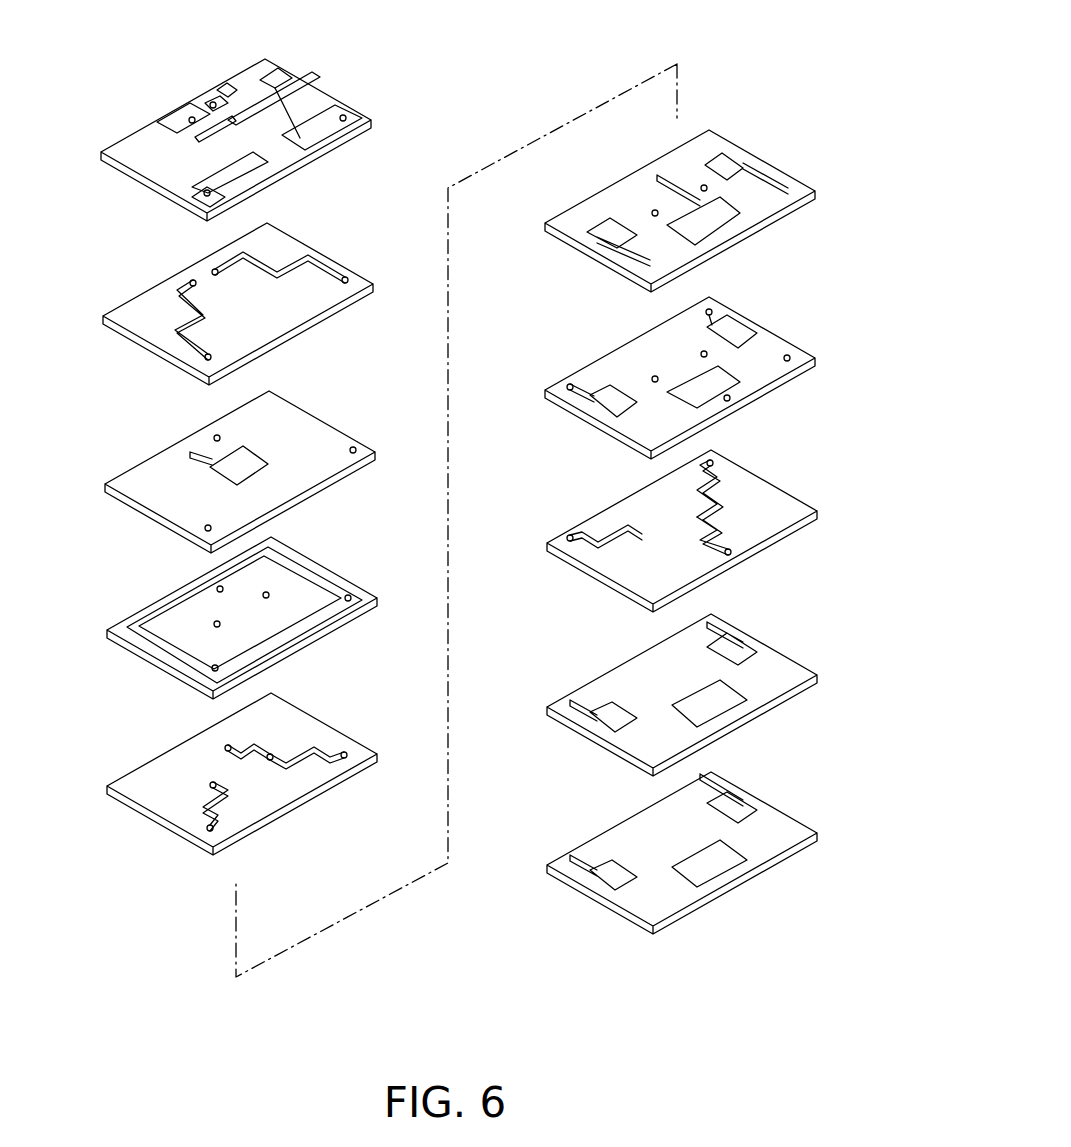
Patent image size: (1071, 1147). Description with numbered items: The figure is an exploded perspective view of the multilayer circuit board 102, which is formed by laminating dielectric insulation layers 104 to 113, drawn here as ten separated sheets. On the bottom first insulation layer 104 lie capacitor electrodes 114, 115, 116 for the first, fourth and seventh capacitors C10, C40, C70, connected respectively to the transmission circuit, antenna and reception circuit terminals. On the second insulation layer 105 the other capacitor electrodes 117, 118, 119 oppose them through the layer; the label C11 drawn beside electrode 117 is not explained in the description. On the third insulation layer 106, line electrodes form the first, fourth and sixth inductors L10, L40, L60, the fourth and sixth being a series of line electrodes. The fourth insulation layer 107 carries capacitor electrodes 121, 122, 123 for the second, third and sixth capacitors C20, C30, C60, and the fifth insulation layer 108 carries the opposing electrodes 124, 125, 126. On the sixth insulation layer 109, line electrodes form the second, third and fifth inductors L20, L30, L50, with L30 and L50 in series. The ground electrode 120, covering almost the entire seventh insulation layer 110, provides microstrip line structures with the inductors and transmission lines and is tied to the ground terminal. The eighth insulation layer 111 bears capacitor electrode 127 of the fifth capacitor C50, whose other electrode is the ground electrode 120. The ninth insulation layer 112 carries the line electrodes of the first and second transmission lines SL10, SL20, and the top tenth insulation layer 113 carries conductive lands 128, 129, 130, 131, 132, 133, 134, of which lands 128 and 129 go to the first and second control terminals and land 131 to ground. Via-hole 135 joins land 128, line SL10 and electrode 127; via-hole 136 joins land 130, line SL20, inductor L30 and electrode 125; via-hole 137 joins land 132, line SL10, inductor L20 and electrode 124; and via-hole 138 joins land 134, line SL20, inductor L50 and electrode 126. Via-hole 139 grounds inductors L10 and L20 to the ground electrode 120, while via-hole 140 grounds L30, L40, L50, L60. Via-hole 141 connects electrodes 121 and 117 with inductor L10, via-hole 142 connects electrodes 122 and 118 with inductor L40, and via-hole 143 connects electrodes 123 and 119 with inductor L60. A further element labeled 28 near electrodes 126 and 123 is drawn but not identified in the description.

The multilayer circuit board 102 is at (134, 41).
The first insulation layer 104 is at (819, 838).
The second insulation layer 105 is at (819, 678).
The third insulation layer 106 is at (819, 512).
The fourth insulation layer 107 is at (818, 360).
The fifth insulation layer 108 is at (816, 195).
The sixth insulation layer 109 is at (378, 758).
The seventh insulation layer 110 is at (377, 601).
The eighth insulation layer 111 is at (375, 453).
The ninth insulation layer 112 is at (373, 286).
The tenth insulation layer 113 is at (373, 128).
The capacitor electrode 114 is at (592, 868).
The capacitor electrode 115 is at (746, 866).
The capacitor electrode 116 is at (756, 810).
The capacitor electrode 117 is at (592, 710).
The capacitor electrode 118 is at (730, 718).
The capacitor electrode 119 is at (756, 650).
The ground electrode 120 is at (288, 556).
The capacitor electrode 121 is at (592, 394).
The capacitor electrode 122 is at (742, 384).
The capacitor electrode 123 is at (756, 333).
The capacitor electrode 124 is at (592, 232).
The capacitor electrode 125 is at (725, 238).
The capacitor electrode 126 is at (750, 160).
The capacitor electrode 127 is at (202, 452).
The conductive land 128 is at (157, 120).
The conductive land 129 is at (222, 86).
The conductive land 130 is at (145, 170).
The conductive land 131 is at (287, 68).
The conductive land 132 is at (255, 165).
The conductive land 133 is at (296, 90).
The conductive land 134 is at (328, 120).
The via-hole 135 is at (185, 118).
The via-hole 136 is at (210, 102).
The via-hole 137 is at (198, 203).
The via-hole 138 is at (350, 114).
The via-hole 139 is at (214, 624).
The via-hole 140 is at (269, 597).
The via-hole 141 is at (567, 387).
The via-hole 142 is at (729, 401).
The via-hole 143 is at (711, 310).
The via 28 is at (800, 190).
The first capacitor C10 is at (600, 890).
The capacitor C11 is at (600, 730).
The second capacitor C20 is at (610, 243).
The third capacitor C30 is at (730, 222).
The fourth capacitor C40 is at (746, 706).
The fifth capacitor C50 is at (268, 465).
The sixth capacitor C60 is at (727, 165).
The seventh capacitor C70 is at (735, 645).
The first inductor L10 is at (600, 538).
The second inductor L20 is at (205, 812).
The third inductor L30 is at (262, 745).
The fourth inductor L40 is at (716, 541).
The fifth inductor L50 is at (330, 756).
The sixth inductor L60 is at (716, 486).
The first transmission line SL10 is at (185, 295).
The second transmission line SL20 is at (310, 262).